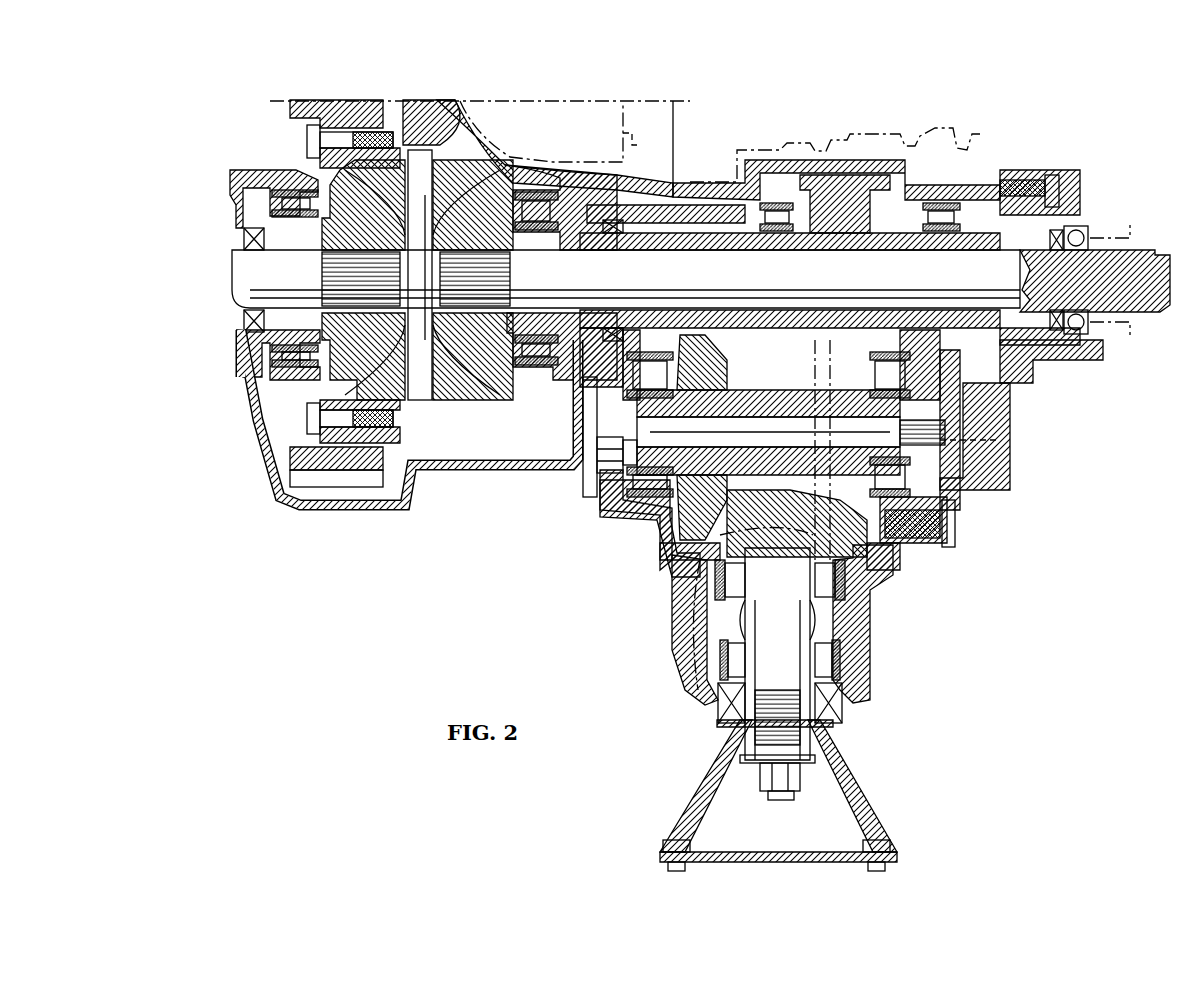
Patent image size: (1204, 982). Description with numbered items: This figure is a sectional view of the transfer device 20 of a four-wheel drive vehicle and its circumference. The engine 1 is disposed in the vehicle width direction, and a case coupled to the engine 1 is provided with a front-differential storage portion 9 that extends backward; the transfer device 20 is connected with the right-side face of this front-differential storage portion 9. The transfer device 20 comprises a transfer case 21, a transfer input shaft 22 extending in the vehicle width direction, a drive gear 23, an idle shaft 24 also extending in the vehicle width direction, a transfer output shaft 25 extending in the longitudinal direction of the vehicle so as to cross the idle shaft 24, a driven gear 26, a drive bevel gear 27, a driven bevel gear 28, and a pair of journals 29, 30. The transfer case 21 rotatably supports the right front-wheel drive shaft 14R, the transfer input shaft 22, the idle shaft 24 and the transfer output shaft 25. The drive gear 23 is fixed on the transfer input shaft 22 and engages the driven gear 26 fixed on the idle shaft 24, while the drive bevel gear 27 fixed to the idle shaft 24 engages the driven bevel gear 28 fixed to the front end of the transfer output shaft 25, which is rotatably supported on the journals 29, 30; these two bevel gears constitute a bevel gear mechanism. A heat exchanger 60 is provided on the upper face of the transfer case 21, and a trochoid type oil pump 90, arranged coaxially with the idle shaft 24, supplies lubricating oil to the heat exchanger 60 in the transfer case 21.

The engine 1 is at (803, 145).
The front-differential storage portion 9 is at (329, 500).
The right front-wheel drive shaft 14R is at (1136, 252).
The transfer device 20 is at (995, 533).
The transfer case 21 is at (870, 560).
The transfer input shaft 22 is at (690, 240).
The drive gear 23 is at (845, 183).
The idle shaft 24 is at (598, 500).
The transfer output shaft 25 is at (740, 618).
The driven gear 26 is at (800, 477).
The drive bevel gear 27 is at (660, 523).
The driven bevel gear 28 is at (672, 566).
The journal 29 is at (867, 593).
The journal 30 is at (850, 665).
The heat exchanger 60 is at (685, 688).
The oil pump 90 is at (1026, 466).